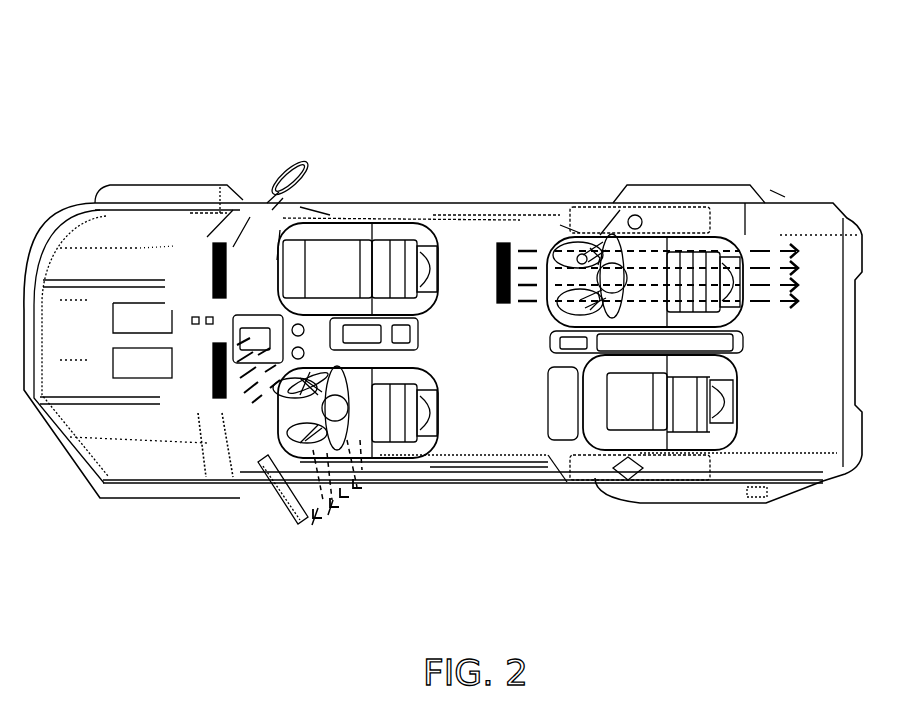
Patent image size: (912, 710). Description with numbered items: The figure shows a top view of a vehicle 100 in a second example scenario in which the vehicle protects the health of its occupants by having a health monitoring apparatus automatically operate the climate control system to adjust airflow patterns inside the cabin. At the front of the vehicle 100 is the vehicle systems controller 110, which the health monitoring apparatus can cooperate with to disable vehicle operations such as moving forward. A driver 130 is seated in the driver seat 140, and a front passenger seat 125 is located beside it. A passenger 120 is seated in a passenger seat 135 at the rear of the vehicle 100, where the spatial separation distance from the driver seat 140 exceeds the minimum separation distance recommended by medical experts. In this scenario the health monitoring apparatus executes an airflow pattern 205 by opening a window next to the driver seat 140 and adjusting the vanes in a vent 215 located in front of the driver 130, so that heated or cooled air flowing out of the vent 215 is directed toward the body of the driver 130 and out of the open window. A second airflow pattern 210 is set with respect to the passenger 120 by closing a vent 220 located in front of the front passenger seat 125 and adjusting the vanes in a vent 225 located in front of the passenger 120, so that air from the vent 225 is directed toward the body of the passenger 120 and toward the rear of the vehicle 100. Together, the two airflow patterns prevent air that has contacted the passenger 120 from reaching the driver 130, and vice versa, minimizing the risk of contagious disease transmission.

The vehicle 100 is at (85, 107).
The vehicle systems controller 110 is at (157, 371).
The passenger 120 is at (630, 247).
The front passenger seat 125 is at (442, 251).
The driver 130 is at (353, 377).
The passenger seat 135 is at (733, 235).
The driver seat 140 is at (440, 373).
The airflow pattern 205 is at (352, 518).
The second airflow pattern 210 is at (757, 312).
The vent 215 is at (213, 374).
The vent 220 is at (213, 272).
The vent 225 is at (497, 272).